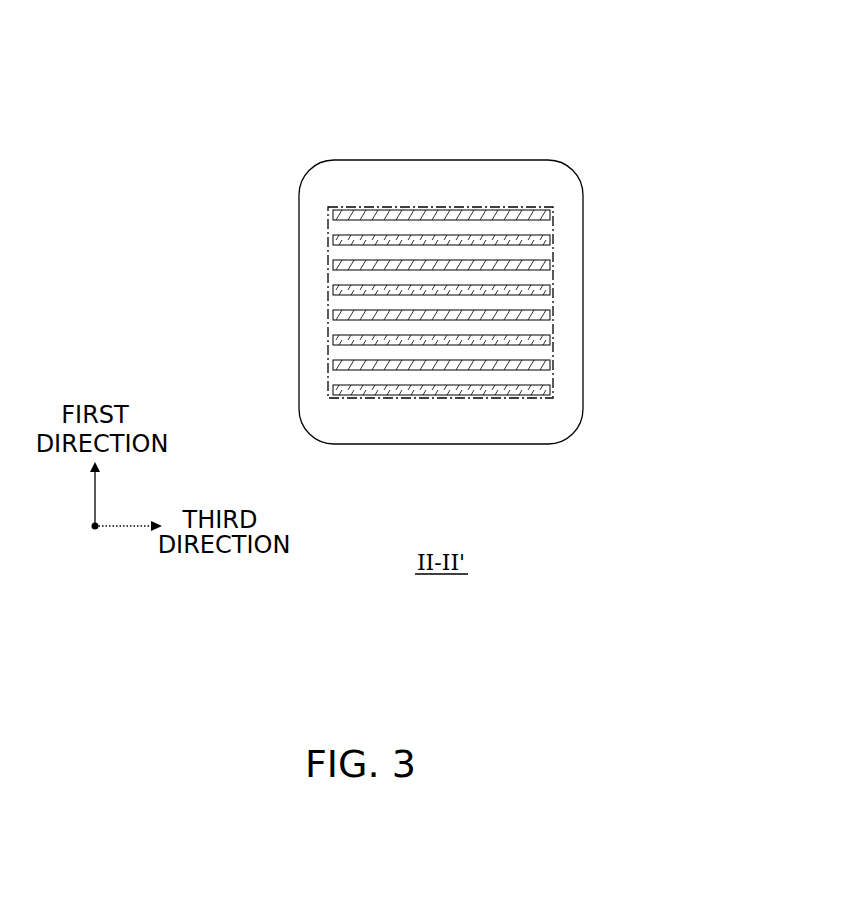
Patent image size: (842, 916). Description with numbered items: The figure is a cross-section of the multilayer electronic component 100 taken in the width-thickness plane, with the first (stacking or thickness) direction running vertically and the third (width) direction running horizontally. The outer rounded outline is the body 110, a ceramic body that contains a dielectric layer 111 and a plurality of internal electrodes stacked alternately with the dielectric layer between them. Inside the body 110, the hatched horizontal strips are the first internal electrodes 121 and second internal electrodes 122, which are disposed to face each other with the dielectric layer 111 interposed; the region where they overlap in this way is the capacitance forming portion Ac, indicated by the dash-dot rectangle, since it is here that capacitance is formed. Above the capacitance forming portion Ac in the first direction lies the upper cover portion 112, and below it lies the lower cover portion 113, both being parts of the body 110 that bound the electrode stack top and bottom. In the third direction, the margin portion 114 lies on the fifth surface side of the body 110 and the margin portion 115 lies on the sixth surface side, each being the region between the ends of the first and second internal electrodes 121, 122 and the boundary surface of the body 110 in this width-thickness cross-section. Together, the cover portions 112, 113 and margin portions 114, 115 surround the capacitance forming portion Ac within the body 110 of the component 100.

The multilayer electronic component 100 is at (184, 36).
The body 110 is at (444, 295).
The dielectric layer 111 is at (454, 249).
The upper cover portion 112 is at (435, 182).
The lower cover portion 113 is at (413, 428).
The margin portion 114 is at (310, 306).
The margin portion 115 is at (567, 320).
The first internal electrode 121 is at (378, 216).
The second internal electrode 122 is at (513, 240).
The capacitance forming portion Ac is at (513, 400).